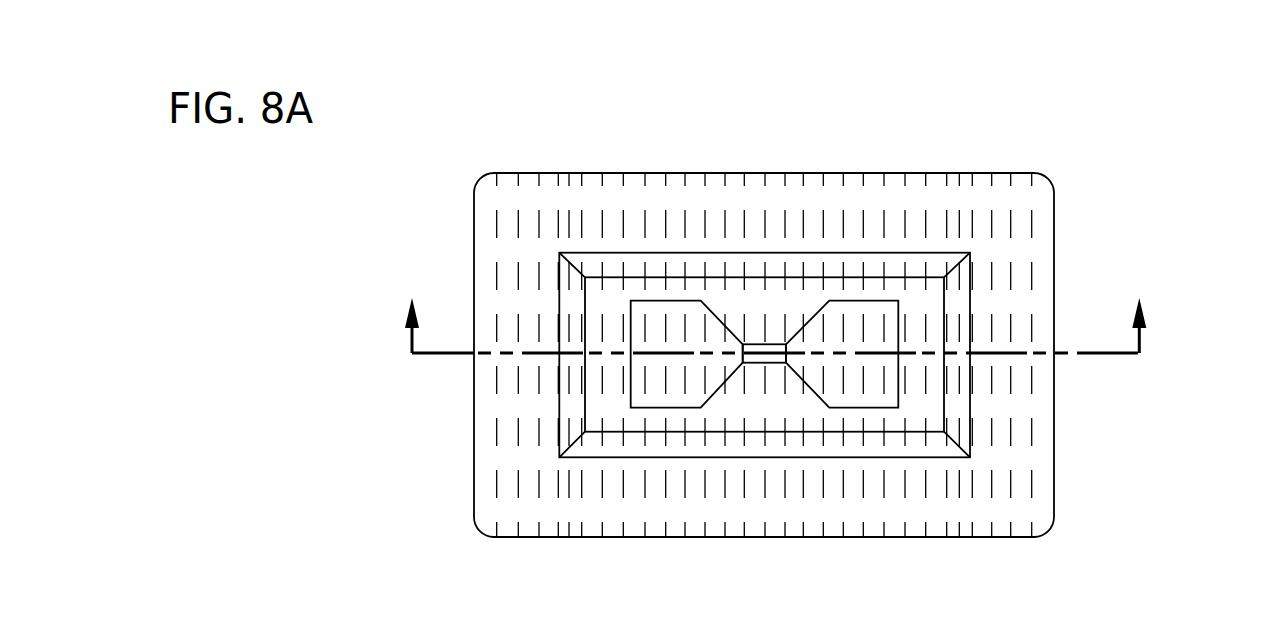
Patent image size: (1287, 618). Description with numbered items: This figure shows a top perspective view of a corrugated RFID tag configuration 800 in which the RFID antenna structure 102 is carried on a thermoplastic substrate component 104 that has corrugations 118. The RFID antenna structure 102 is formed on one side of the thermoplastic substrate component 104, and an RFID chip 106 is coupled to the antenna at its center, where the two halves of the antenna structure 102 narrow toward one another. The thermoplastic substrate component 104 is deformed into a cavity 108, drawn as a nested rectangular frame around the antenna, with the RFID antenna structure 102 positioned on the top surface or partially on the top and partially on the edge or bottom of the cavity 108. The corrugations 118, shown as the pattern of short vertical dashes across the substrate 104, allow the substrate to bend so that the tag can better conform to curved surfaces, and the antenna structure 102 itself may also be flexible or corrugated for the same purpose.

The RFID antenna structure with corrugated substrate 800 is at (1139, 155).
The RFID antenna structure 102 is at (659, 322).
The thermoplastic substrate component 104 is at (1022, 500).
The RFID chip 106 is at (768, 343).
The cavity 108 is at (900, 288).
The corrugations 118 is at (518, 517).